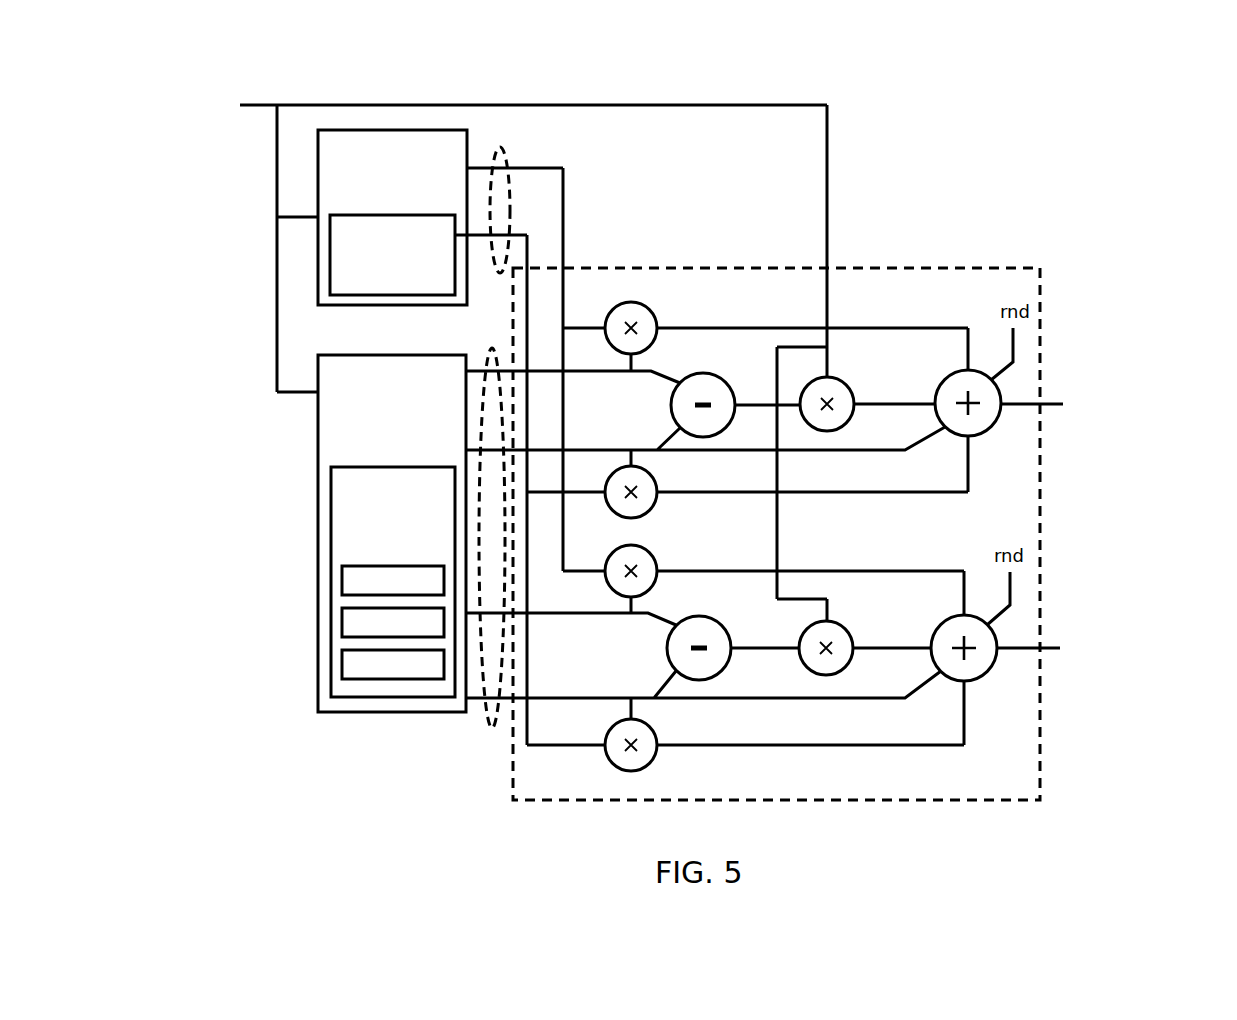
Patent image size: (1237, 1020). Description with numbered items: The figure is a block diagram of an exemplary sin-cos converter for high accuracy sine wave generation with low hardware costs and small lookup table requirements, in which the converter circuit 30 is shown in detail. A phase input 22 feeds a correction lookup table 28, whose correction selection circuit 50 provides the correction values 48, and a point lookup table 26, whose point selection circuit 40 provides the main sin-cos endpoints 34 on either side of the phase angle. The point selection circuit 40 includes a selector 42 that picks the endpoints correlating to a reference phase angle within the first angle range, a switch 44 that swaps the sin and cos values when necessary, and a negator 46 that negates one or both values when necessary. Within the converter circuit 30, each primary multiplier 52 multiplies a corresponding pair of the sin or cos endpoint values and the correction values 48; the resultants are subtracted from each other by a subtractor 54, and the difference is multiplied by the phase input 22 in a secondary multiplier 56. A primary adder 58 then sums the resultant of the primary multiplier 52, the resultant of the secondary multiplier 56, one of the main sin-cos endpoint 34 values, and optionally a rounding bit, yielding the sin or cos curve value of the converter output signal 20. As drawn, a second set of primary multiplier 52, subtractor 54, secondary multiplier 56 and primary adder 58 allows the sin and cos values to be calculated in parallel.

The converter output signal 20 is at (1107, 400).
The phase input 22 is at (240, 105).
The point lookup table 26 is at (318, 418).
The correction lookup table 28 is at (318, 155).
The converter circuit 30 is at (1040, 283).
The main sin-cos endpoints 34 is at (492, 728).
The point selection circuit 40 is at (331, 519).
The selector 42 is at (342, 583).
The switch 44 is at (342, 624).
The negator 46 is at (342, 665).
The correction values 48 is at (503, 148).
The correction selection circuit 50 is at (330, 257).
The primary multiplier 52 is at (633, 302).
The subtractor 54 is at (712, 372).
The secondary multiplier 56 is at (843, 378).
The primary adder 58 is at (995, 423).